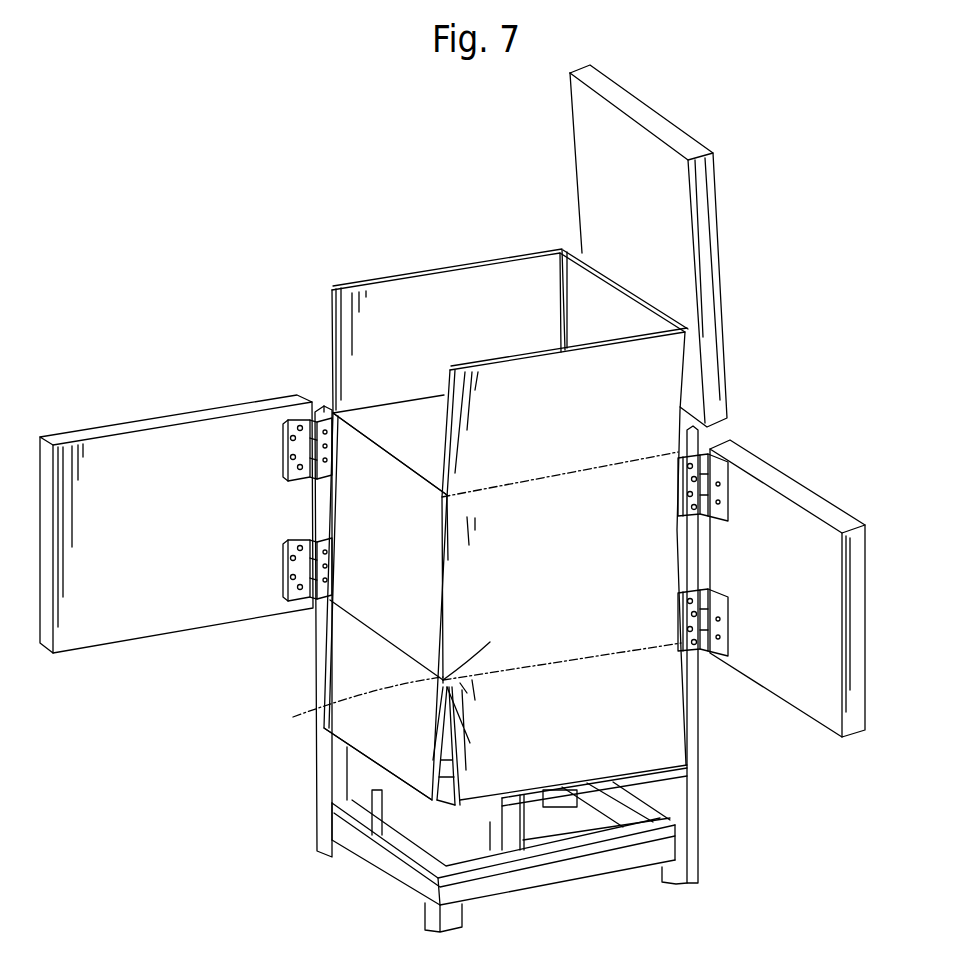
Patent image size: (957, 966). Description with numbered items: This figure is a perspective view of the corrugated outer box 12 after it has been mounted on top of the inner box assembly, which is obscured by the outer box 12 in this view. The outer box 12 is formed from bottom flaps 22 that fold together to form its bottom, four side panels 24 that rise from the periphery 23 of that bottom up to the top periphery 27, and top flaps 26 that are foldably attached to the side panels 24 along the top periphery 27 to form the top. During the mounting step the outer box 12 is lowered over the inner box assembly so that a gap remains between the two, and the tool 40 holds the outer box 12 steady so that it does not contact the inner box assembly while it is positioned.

The outer box 12 is at (370, 600).
The bottom flaps 22 is at (523, 345).
The periphery of the bottom 23 is at (605, 462).
The side panels 24 is at (647, 533).
The top flaps 26 is at (382, 742).
The top periphery 27 is at (627, 657).
The tool 40 is at (697, 847).